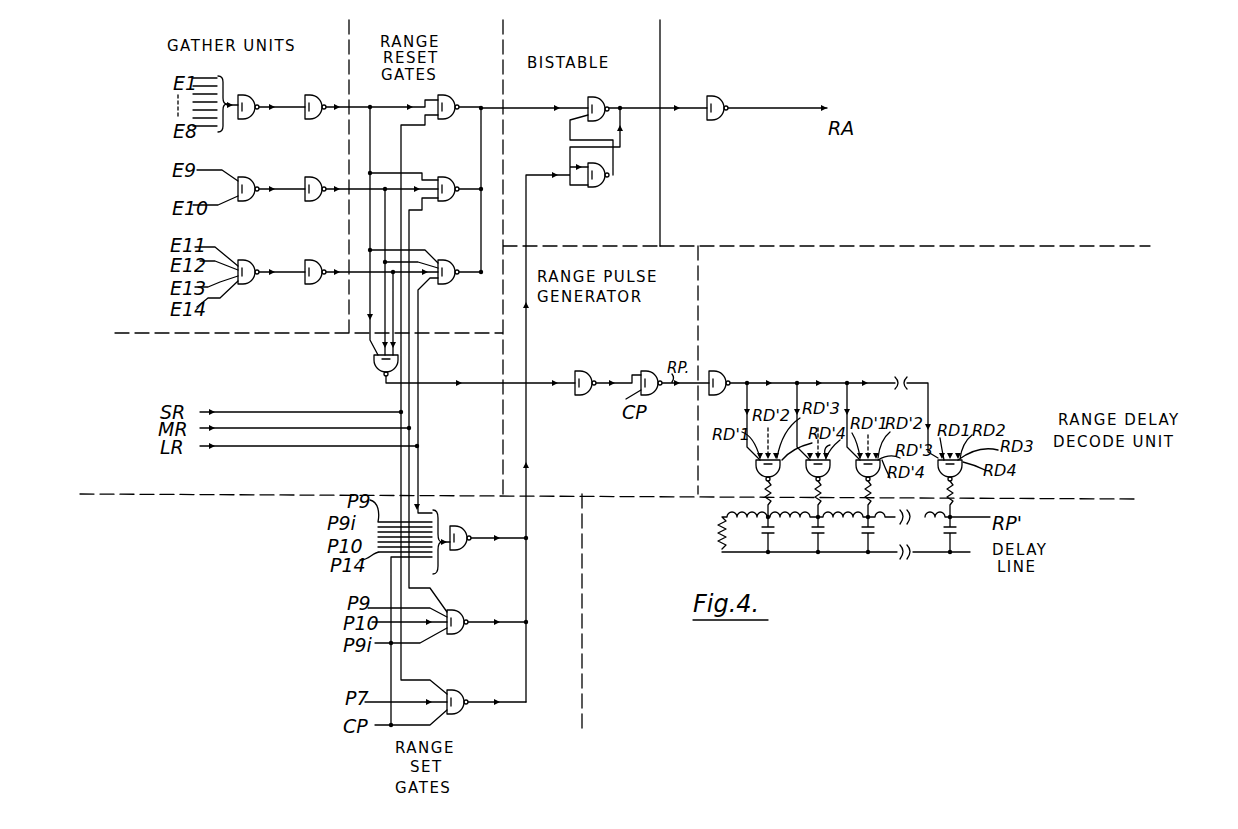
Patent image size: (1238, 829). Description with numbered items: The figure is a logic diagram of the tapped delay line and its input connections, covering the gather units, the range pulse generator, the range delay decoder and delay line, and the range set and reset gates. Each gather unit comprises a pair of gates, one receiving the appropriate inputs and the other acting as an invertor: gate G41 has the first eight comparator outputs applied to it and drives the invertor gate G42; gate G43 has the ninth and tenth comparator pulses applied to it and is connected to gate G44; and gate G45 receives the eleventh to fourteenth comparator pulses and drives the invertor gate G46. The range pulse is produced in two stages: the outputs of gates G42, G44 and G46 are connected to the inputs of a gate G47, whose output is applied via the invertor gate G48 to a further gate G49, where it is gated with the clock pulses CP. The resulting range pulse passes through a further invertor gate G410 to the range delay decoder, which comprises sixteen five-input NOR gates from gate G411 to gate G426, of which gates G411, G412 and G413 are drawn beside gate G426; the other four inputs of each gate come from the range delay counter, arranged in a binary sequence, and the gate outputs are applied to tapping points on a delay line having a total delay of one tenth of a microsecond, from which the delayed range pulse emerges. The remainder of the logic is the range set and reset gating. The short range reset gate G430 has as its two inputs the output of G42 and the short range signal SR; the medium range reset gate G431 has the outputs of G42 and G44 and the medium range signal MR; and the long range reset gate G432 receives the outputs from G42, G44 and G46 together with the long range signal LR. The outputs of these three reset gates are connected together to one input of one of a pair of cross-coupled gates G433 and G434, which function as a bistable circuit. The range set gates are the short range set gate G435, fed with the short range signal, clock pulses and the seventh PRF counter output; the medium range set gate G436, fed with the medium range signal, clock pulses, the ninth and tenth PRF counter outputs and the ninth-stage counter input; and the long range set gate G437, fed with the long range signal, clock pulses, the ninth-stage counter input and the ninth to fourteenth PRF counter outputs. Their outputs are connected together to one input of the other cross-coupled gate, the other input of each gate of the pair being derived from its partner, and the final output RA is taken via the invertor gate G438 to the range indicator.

The gate G41 is at (256, 119).
The invertor gate G42 is at (318, 119).
The gate G43 is at (257, 199).
The gate G44 is at (318, 199).
The gate G45 is at (257, 261).
The invertor gate G46 is at (318, 261).
The short range reset gate G430 is at (452, 120).
The medium range reset gate G431 is at (452, 202).
The long range reset gate G432 is at (454, 284).
The cross-coupled gate G433 is at (580, 114).
The cross-coupled gate G434 is at (599, 190).
The invertor gate G438 is at (719, 125).
The gate G47 is at (365, 362).
The invertor gate G48 is at (586, 371).
The gate G49 is at (650, 371).
The invertor gate G410 is at (720, 371).
The five-input NOR gate G411 is at (746, 477).
The five-input NOR gate G412 is at (802, 477).
The five-input NOR gate G413 is at (852, 477).
The five-input NOR gate G426 is at (973, 482).
The short range set gate G435 is at (479, 529).
The medium range set gate G436 is at (480, 612).
The long range set gate G437 is at (478, 693).